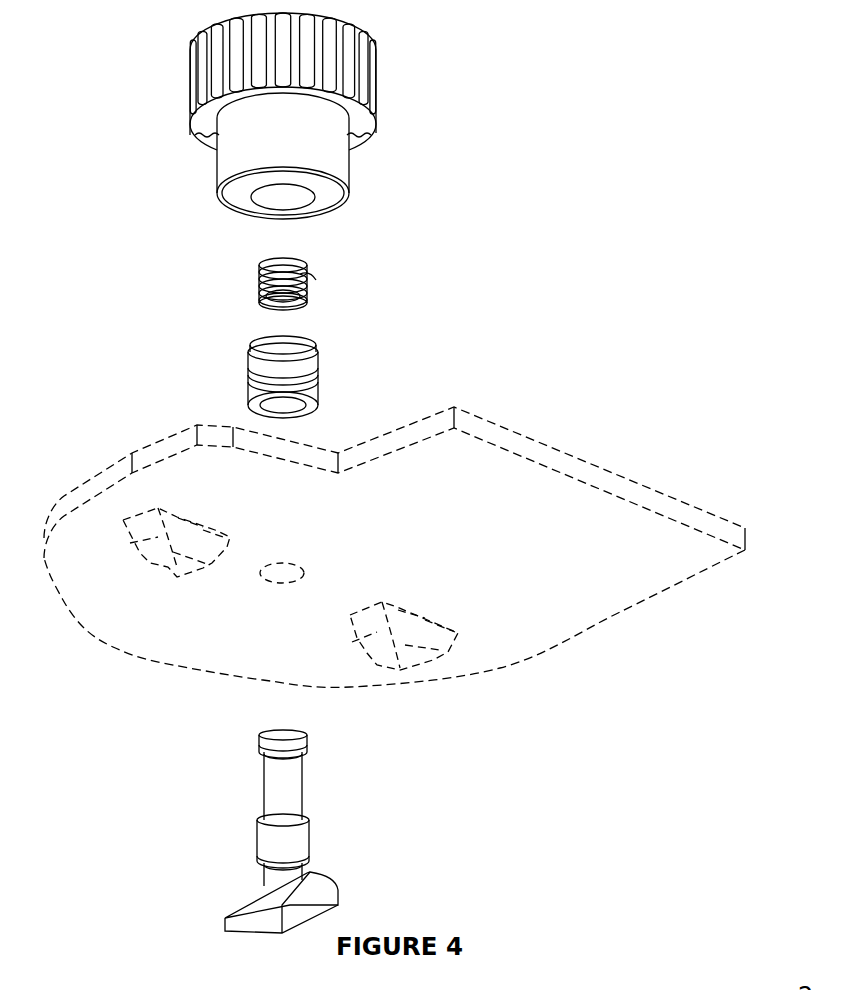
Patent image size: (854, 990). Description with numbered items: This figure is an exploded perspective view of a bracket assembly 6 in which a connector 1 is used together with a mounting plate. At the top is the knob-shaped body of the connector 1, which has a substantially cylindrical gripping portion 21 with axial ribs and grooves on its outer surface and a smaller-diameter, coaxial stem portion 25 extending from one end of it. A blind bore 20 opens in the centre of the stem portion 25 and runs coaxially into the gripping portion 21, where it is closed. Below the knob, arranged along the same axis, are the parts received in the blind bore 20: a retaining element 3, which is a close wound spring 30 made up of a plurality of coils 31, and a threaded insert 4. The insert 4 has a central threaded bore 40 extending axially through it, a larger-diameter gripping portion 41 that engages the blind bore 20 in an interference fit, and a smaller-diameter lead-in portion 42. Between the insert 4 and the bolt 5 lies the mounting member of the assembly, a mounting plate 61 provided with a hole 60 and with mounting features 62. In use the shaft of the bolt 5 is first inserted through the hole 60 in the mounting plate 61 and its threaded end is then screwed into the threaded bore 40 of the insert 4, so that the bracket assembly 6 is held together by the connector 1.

The connector 1 is at (126, 238).
The gripping portion 21 is at (196, 80).
The stem portion 25 is at (298, 146).
The blind bore 20 is at (285, 198).
The retaining element 3 is at (345, 270).
The close wound spring 30 is at (260, 277).
The coils 31 is at (316, 280).
The threaded insert 4 is at (345, 370).
The lead-in portion 42 is at (262, 344).
The gripping portion 41 is at (262, 392).
The threaded bore 40 is at (288, 405).
The bolt 5 is at (290, 800).
The bracket assembly 6 is at (630, 130).
The mounting plate 61 is at (499, 548).
The hole 60 is at (280, 585).
The mounting features 62 is at (168, 572).